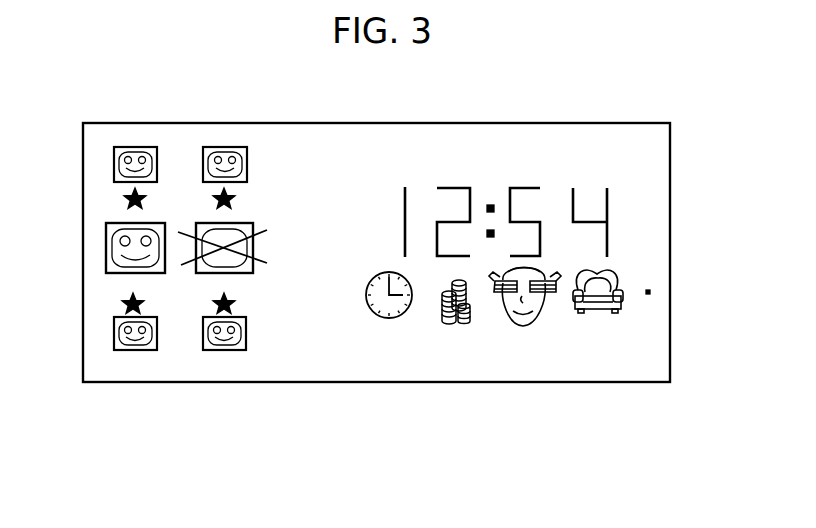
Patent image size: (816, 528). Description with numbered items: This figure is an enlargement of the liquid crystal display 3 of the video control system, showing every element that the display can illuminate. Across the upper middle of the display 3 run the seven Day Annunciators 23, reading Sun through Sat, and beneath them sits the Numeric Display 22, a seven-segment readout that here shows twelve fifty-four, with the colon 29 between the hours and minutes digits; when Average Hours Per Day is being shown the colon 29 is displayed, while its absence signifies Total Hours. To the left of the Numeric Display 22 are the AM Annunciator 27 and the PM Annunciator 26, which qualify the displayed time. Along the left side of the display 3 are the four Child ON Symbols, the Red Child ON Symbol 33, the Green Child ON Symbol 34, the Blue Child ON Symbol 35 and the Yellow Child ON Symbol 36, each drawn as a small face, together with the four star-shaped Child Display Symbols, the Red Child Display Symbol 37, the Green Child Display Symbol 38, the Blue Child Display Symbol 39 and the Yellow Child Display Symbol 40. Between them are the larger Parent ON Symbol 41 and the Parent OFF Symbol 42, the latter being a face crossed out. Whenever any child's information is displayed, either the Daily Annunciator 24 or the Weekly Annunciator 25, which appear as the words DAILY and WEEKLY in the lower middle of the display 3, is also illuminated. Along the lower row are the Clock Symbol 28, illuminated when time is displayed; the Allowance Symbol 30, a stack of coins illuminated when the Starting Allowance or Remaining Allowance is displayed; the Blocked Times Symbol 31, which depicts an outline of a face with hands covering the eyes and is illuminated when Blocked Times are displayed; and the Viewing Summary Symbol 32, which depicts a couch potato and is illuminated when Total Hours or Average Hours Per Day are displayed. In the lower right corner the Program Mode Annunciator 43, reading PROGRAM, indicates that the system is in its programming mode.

The display 3 is at (686, 295).
The Numeric Display 22 is at (620, 224).
The Day Annunciators 23 is at (656, 159).
The Daily Annunciator 24 is at (267, 290).
The Weekly Annunciator 25 is at (273, 317).
The PM Annunciator 26 is at (311, 232).
The AM Annunciator 27 is at (312, 210).
The Clock Symbol 28 is at (391, 318).
The colon 29 is at (490, 201).
The Allowance Symbol 30 is at (453, 322).
The Blocked Times Symbol 31 is at (518, 326).
The Viewing Summary Symbol 32 is at (577, 313).
The Red Child ON Symbol 33 is at (134, 147).
The Green Child ON Symbol 34 is at (225, 147).
The Blue Child ON Symbol 35 is at (133, 350).
The Yellow Child ON Symbol 36 is at (224, 350).
The Red Child Display Symbol 37 is at (125, 200).
The Green Child Display Symbol 38 is at (211, 203).
The Blue Child Display Symbol 39 is at (121, 306).
The Yellow Child Display Symbol 40 is at (213, 306).
The Parent ON Symbol 41 is at (106, 242).
The Parent OFF Symbol 42 is at (197, 270).
The Program Mode Annunciator 43 is at (614, 377).